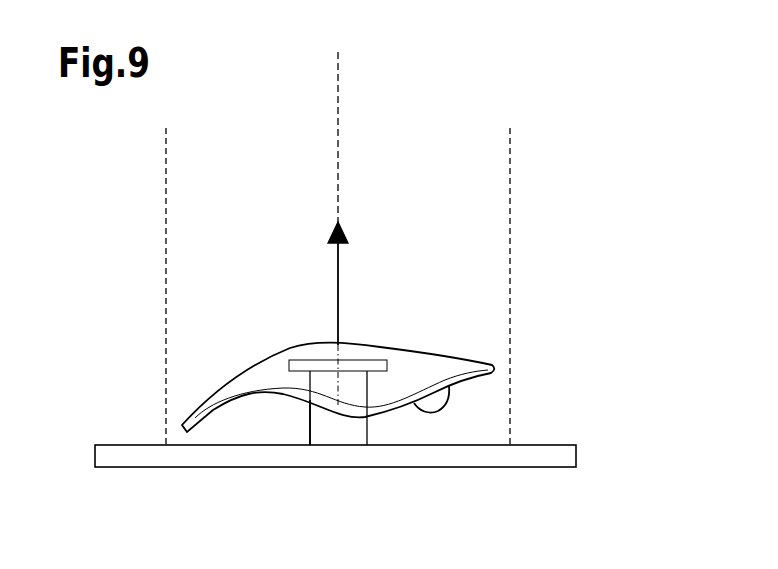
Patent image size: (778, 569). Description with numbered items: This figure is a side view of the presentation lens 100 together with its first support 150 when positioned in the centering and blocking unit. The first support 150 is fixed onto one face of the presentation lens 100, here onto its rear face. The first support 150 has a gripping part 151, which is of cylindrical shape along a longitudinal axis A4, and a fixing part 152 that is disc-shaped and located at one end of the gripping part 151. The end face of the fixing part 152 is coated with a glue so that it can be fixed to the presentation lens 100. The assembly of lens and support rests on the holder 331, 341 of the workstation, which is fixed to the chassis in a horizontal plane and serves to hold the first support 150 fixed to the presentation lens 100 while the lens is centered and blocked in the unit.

The longitudinal axis A4 is at (338, 107).
The presentation lens 100 is at (441, 352).
The fixing part 152 is at (387, 366).
The first support 150 is at (368, 431).
The gripping part 151 is at (309, 425).
The holder 331 is at (335, 456).
The support plate 341 is at (548, 445).